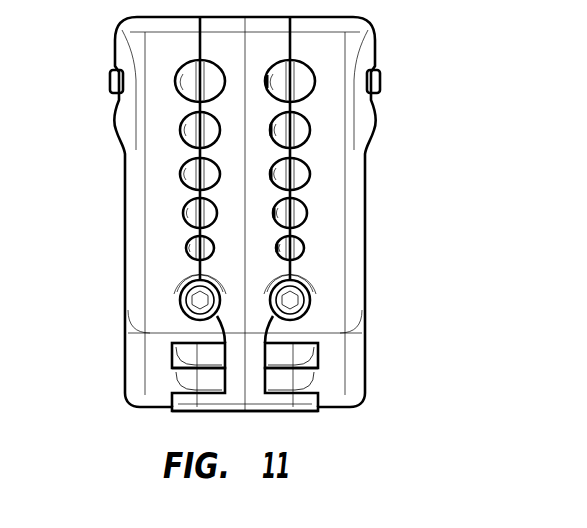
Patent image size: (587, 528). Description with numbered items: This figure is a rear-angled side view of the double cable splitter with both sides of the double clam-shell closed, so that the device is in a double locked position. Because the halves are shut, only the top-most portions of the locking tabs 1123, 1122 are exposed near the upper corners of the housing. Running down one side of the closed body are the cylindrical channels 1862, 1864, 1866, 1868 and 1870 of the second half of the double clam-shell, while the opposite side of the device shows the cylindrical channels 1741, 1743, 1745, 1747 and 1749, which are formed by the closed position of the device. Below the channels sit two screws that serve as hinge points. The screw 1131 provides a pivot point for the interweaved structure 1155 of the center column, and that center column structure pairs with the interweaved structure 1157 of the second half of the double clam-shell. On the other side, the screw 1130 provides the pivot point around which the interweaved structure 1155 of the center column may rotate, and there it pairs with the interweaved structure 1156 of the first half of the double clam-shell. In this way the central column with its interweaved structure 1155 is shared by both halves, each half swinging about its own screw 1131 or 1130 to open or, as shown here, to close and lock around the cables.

The locking tab 1123 is at (113, 73).
The locking tab 1122 is at (377, 73).
The cylindrical channel 1862 is at (200, 87).
The cylindrical channel 1864 is at (200, 135).
The cylindrical channel 1866 is at (200, 178).
The cylindrical channel 1868 is at (200, 216).
The cylindrical channel 1870 is at (200, 250).
The cylindrical channel 1749 is at (290, 89).
The cylindrical channel 1747 is at (290, 135).
The cylindrical channel 1745 is at (290, 177).
The cylindrical channel 1743 is at (290, 215).
The cylindrical channel 1741 is at (290, 250).
The screw 1131 is at (200, 300).
The screw 1130 is at (290, 300).
The interweaved structure 1157 is at (177, 382).
The interweaved structure 1156 is at (313, 380).
The interweaved structure 1155 is at (253, 400).